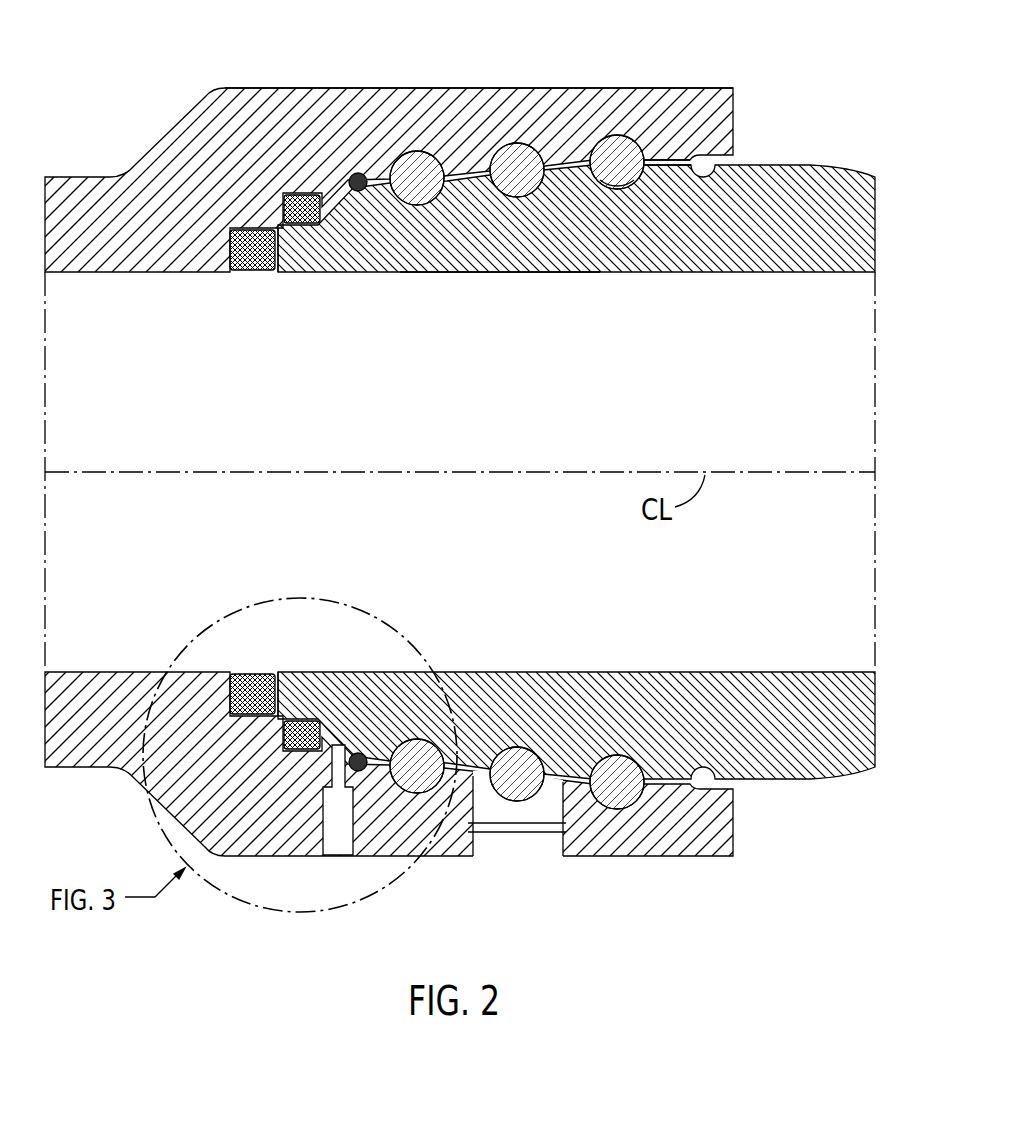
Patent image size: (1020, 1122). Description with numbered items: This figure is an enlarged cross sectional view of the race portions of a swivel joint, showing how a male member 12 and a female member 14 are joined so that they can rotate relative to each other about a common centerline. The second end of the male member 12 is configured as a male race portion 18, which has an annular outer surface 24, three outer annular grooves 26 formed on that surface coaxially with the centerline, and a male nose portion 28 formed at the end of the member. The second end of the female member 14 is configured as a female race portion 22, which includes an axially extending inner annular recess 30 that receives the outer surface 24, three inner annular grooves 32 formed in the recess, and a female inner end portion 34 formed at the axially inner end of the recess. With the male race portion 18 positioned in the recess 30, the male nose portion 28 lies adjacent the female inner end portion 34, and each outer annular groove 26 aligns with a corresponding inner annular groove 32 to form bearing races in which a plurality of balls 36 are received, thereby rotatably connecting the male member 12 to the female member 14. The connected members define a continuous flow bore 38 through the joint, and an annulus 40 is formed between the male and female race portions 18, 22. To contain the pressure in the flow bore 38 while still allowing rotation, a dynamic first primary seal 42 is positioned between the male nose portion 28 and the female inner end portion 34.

The male member 12 is at (822, 168).
The female member 14 is at (96, 176).
The male race portion 18 is at (521, 288).
The female race portion 22 is at (472, 80).
The annular outer surface 24 is at (583, 160).
The outer annular grooves 26 is at (615, 190).
The male nose portion 28 is at (331, 186).
The inner annular recess 30 is at (480, 172).
The inner annular grooves 32 is at (613, 136).
The female inner end portion 34 is at (294, 248).
The balls 36 is at (645, 158).
The flow bore 38 is at (751, 405).
The annulus 40 is at (356, 193).
The first primary seal 42 is at (252, 272).